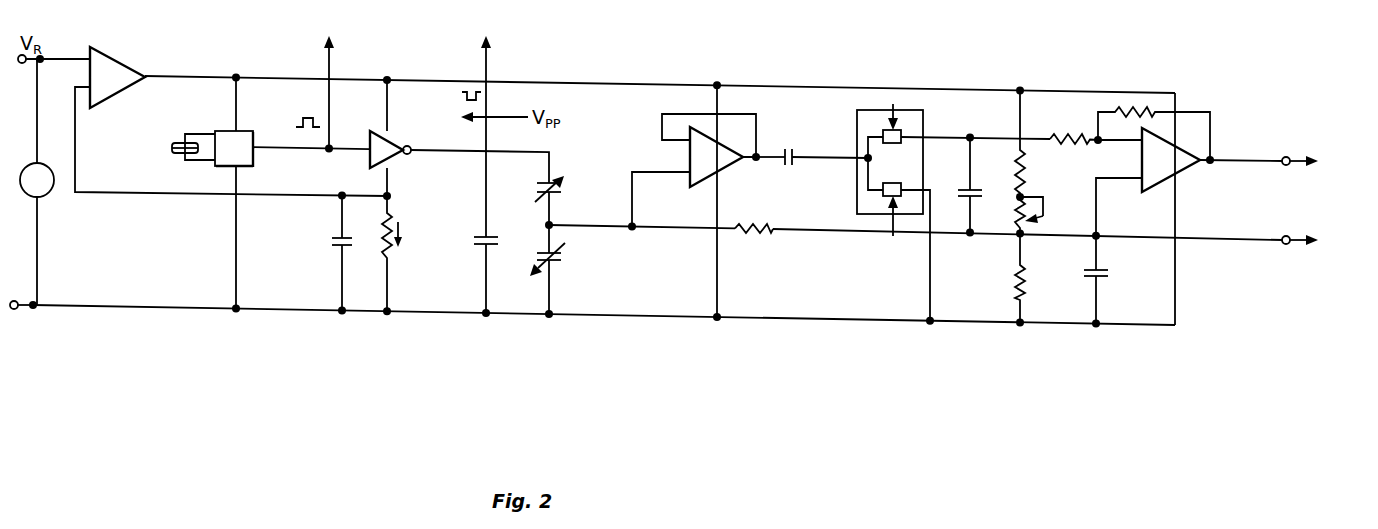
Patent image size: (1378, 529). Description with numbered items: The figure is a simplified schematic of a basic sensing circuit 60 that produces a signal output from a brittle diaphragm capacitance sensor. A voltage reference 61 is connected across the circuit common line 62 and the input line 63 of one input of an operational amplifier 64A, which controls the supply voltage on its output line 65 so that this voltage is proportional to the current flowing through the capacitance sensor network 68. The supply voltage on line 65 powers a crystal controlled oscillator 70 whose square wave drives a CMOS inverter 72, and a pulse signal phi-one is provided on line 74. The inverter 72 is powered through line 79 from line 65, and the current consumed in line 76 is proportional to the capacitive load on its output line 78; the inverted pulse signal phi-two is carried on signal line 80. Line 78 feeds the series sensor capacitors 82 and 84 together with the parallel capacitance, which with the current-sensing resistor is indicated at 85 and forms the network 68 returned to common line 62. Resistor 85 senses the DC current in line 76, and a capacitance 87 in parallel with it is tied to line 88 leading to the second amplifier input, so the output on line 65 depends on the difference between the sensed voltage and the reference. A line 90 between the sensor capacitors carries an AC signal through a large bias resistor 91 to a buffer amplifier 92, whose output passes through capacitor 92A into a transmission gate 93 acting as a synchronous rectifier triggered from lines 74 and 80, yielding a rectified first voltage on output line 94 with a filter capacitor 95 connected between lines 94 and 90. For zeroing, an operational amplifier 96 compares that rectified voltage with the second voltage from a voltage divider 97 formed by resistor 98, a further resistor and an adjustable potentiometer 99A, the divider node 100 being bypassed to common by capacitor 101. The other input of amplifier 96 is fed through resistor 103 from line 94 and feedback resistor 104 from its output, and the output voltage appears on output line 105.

The sensing circuit 60 is at (685, 324).
The voltage reference 61 is at (47, 196).
The circuit common line 62 is at (830, 320).
The input line 63 is at (68, 57).
The operational amplifier 64A is at (125, 63).
The output line 65 is at (222, 78).
The capacitance sensor network 68 is at (562, 215).
The crystal controlled oscillator 70 is at (224, 130).
The CMOS inverter 72 is at (398, 145).
The line 74 is at (331, 66).
The line 76 is at (386, 183).
The output line 78 is at (432, 153).
The line 79 is at (386, 110).
The signal line 80 is at (488, 75).
The sensor capacitor C1 82 is at (564, 186).
The sensor capacitor C2 84 is at (572, 260).
The resistor R1 85 is at (393, 217).
The capacitance 87 is at (335, 247).
The line 88 is at (166, 194).
The line 90 is at (662, 234).
The bias resistor 91 is at (753, 224).
The buffer amplifier 92 is at (690, 152).
The capacitor 92A is at (794, 152).
The transmission gate 93 is at (857, 195).
The output line 94 is at (953, 136).
The filter capacitor 95 is at (966, 186).
The operational amplifier 96 is at (1178, 151).
The voltage divider 97 is at (1015, 285).
The resistor R2 98 is at (1014, 172).
The adjustable potentiometer 99A is at (1043, 197).
The node 100 is at (1099, 232).
The capacitor 101 is at (1100, 268).
The resistor R4 103 is at (1060, 133).
The feedback resistor R5 104 is at (1140, 110).
The output line 105 is at (1244, 163).